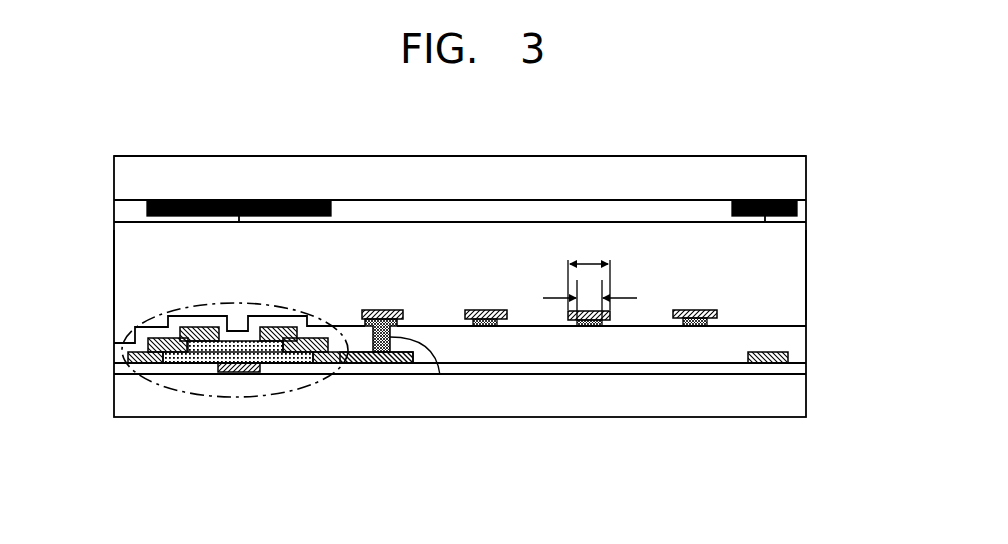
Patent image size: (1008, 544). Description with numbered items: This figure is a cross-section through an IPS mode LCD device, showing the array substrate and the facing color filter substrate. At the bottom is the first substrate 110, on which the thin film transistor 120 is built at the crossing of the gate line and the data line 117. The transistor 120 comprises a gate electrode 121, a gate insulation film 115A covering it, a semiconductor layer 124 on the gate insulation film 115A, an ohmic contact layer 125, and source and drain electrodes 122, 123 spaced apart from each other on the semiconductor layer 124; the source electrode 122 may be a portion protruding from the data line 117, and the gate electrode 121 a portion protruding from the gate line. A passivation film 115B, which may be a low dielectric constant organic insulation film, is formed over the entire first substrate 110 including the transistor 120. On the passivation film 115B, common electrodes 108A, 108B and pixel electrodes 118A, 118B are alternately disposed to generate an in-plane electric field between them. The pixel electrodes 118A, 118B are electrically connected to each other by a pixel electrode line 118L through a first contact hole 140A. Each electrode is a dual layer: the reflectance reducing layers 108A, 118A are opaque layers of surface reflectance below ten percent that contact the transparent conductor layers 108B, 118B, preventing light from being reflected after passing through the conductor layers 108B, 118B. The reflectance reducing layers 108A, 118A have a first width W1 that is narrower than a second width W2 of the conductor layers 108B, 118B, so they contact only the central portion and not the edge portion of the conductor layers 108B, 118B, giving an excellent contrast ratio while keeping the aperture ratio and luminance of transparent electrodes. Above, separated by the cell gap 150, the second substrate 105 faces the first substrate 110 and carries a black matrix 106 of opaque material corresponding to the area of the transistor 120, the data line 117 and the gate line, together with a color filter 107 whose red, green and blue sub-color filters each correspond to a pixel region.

The second substrate 105 is at (806, 171).
The black matrix 106 is at (806, 207).
The color filter 107 is at (806, 222).
The filler / gap layer 150 is at (806, 274).
The passivation film 115B is at (806, 344).
The gate insulation film 115A is at (806, 367).
The first substrate 110 is at (806, 398).
The thin film transistor 120 is at (162, 316).
The gate electrode 121 is at (237, 372).
The ohmic contact layer 125 is at (185, 363).
The data line 117 is at (147, 363).
The source electrode 122 is at (203, 327).
The drain electrode 123 is at (275, 327).
The semiconductor layer 124 is at (296, 363).
The pixel electrode line 118L is at (363, 363).
The reflectance reducing layer of pixel electrode 118A is at (366, 320).
The conductor layer of pixel electrode 118B is at (381, 310).
The reflectance reducing layer of common electrode 108A is at (468, 325).
The conductor layer of common electrode 108B is at (488, 310).
The first contact hole 140A is at (441, 378).
The first width W1 is at (590, 297).
The second width W2 is at (589, 274).